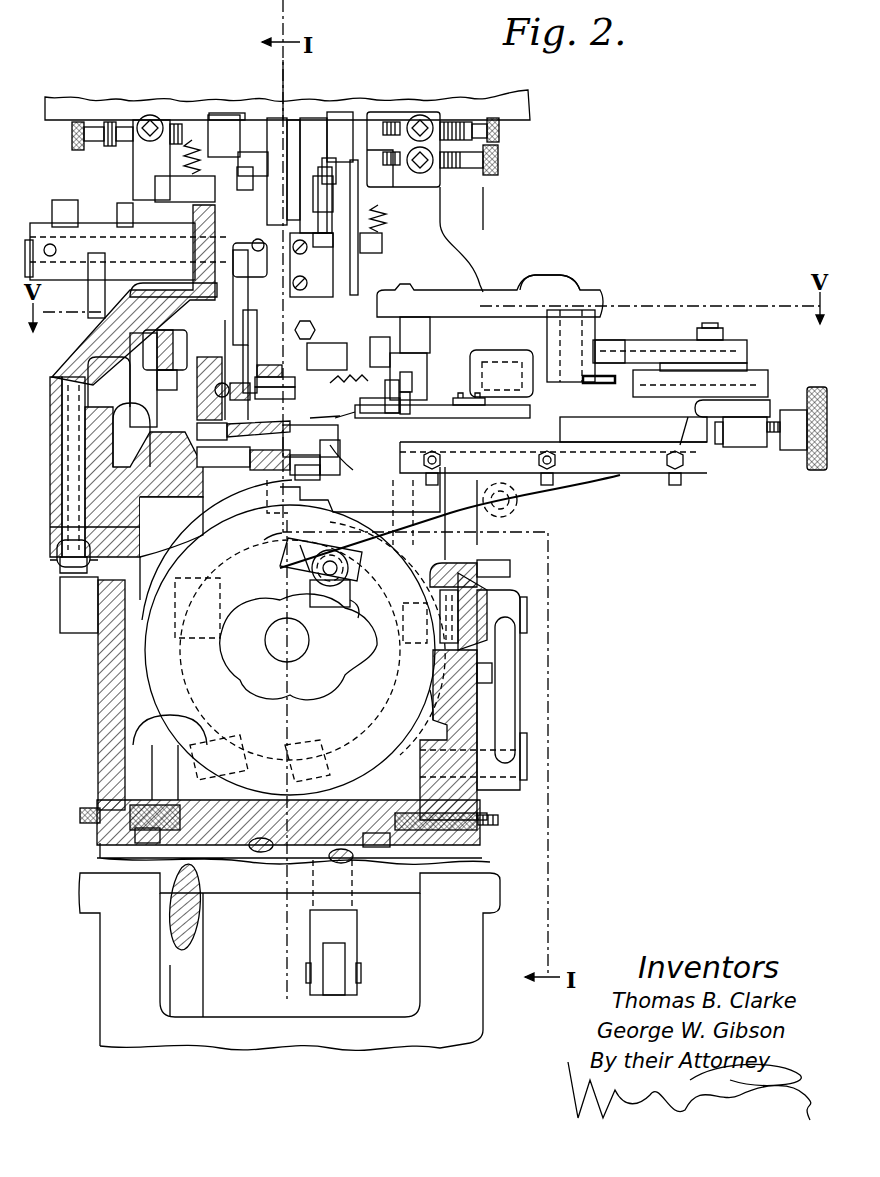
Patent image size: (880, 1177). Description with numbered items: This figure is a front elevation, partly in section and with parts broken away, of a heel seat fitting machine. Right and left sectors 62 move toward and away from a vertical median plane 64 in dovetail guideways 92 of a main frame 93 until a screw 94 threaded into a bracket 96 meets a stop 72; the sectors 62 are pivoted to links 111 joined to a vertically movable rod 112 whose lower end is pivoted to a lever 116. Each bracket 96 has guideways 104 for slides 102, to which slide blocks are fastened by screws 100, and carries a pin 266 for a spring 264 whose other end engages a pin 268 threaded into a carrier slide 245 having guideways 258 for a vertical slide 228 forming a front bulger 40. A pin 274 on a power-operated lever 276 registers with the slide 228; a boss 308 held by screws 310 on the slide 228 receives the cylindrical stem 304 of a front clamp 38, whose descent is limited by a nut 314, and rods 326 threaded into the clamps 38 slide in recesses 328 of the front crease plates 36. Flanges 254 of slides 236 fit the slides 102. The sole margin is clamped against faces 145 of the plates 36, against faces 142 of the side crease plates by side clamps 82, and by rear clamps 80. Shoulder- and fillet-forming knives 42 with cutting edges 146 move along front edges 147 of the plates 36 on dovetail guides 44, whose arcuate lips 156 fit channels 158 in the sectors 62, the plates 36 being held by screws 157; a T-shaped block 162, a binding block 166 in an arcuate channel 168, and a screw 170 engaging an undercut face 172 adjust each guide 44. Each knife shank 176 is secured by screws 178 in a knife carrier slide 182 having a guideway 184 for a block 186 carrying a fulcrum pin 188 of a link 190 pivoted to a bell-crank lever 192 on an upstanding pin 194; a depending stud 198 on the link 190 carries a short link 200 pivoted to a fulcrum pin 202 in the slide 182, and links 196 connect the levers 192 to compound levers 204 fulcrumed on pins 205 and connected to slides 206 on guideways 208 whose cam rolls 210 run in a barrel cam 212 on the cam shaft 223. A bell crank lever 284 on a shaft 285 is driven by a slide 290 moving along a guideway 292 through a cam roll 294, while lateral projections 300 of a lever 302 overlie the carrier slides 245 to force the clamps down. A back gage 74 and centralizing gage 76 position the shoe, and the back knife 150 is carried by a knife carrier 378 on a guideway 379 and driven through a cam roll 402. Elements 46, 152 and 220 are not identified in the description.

The front crease plates 36 is at (382, 392).
The front clamps 38 is at (321, 345).
The bulgers 40 is at (275, 386).
The shoulder- and fillet-forming knives 42 is at (380, 400).
The dovetail guide 44 is at (770, 400).
The block 46 is at (310, 428).
The sectors 62 is at (665, 472).
The vertical median plane 64 is at (284, 78).
The stop 72 is at (385, 112).
The back gage 74 is at (360, 489).
The centralizing gage 76 is at (372, 513).
The rear clamps 80 is at (275, 399).
The side clamps 82 is at (360, 360).
The dovetail guideways 92 is at (600, 470).
The main frame 93 is at (580, 500).
The screw 94 is at (455, 120).
The brackets 96 is at (470, 275).
The screws 100 is at (222, 382).
The slides 102 is at (232, 400).
The guideways 104 is at (208, 362).
The links 111 is at (329, 562).
The rod 112 is at (368, 614).
The lever 116 is at (338, 995).
The faces 142 is at (345, 407).
The faces 145 is at (322, 408).
The cutting edges 146 is at (351, 461).
The front edges 147 is at (344, 457).
The back knife 150 is at (312, 459).
The plate 152 is at (317, 473).
The arcuate lip 156 is at (630, 428).
The screws 157 is at (417, 396).
The arcuate channel 158 is at (530, 468).
The T-shaped block 162 is at (752, 448).
The binding block 166 is at (480, 428).
The arcuate channel 168 is at (456, 468).
The screw 170 is at (815, 470).
The undercut arcuate face 172 is at (718, 445).
The shank 176 is at (405, 420).
The screws 178 is at (464, 391).
The knife carrier slide 182 is at (645, 420).
The dovetail guideway 184 is at (768, 375).
The block 186 is at (742, 362).
The fulcrum pin 188 is at (722, 342).
The link 190 is at (665, 348).
The bell-crank lever 192 is at (585, 325).
The upstanding pin 194 is at (552, 277).
The links 196 is at (426, 326).
The depending stud 198 is at (615, 348).
The short link 200 is at (583, 385).
The fulcrum pin 202 is at (501, 361).
The compound levers 204 is at (290, 650).
The pins 205 is at (301, 610).
The slides 206 is at (355, 860).
The guideways 208 is at (283, 849).
The cam rolls 210 is at (260, 755).
The barrel cam 212 is at (406, 734).
The recess 220 is at (197, 532).
The cam shaft 223 is at (262, 662).
The slide 228 is at (264, 254).
The slide 236 is at (268, 365).
The carrier slide 245 is at (252, 187).
The vertical flanges 254 is at (252, 345).
The guideways 258 is at (283, 137).
The spring 264 is at (190, 155).
The pin 266 is at (202, 118).
The pin 268 is at (383, 243).
The pin 274 is at (286, 159).
The power-operated lever 276 is at (295, 171).
The bell crank lever 284 is at (505, 678).
The shaft 285 is at (510, 805).
The slide 290 is at (471, 696).
The guideway 292 is at (488, 573).
The cam roll 294 is at (387, 638).
The lateral projections 300 is at (245, 109).
The lever 302 is at (308, 118).
The cylindrical stem 304 is at (317, 284).
The boss 308 is at (327, 235).
The screws 310 is at (300, 254).
The nut 314 is at (330, 212).
The rods 326 is at (405, 280).
The vertical recesses 328 is at (417, 377).
The knife carrier 378 is at (243, 458).
The guideway 379 is at (243, 430).
The cam roll 402 is at (270, 535).